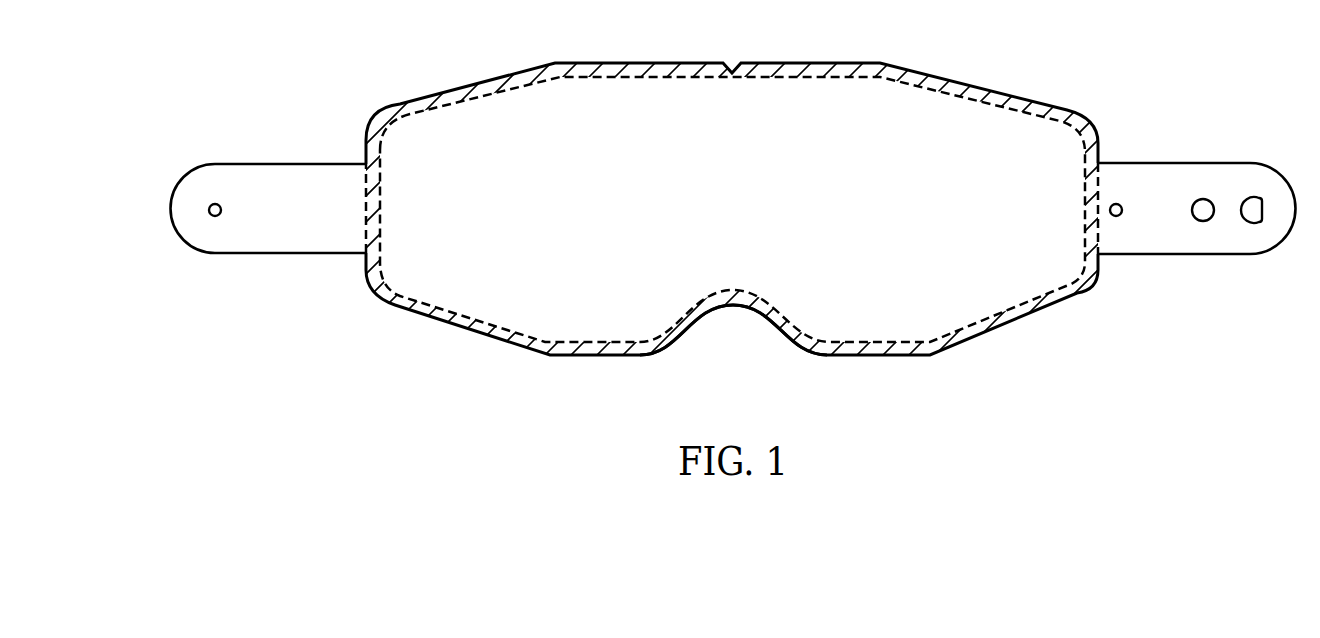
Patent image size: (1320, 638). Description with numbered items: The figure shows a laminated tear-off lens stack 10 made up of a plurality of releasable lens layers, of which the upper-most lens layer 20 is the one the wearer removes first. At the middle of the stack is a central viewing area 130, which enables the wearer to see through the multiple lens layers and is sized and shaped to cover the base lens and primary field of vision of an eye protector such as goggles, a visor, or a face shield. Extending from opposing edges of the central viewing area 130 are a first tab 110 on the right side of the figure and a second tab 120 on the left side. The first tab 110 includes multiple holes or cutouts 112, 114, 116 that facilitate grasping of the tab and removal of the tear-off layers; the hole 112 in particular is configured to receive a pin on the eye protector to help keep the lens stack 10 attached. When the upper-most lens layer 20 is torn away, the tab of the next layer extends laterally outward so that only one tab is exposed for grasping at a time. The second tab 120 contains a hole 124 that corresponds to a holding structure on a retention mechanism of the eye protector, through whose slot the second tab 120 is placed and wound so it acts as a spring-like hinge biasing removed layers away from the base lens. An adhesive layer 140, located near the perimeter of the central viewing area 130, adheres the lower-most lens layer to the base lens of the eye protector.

The laminated tear-off lens stack 10 is at (660, 210).
The upper-most lens layer 20 is at (942, 347).
The first tab 110 is at (1196, 214).
The hole 112 is at (1116, 217).
The hole 114 is at (1203, 222).
The cutout 116 is at (1252, 224).
The second tab 120 is at (235, 186).
The hole 124 is at (208, 210).
The central viewing area 130 is at (797, 128).
The adhesive layer 140 is at (492, 336).